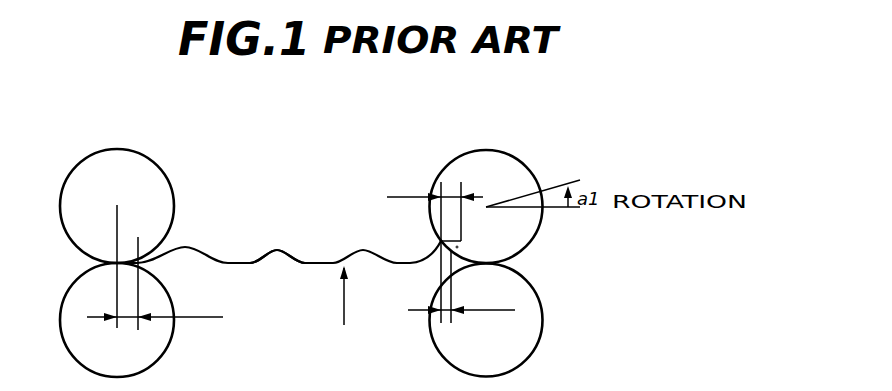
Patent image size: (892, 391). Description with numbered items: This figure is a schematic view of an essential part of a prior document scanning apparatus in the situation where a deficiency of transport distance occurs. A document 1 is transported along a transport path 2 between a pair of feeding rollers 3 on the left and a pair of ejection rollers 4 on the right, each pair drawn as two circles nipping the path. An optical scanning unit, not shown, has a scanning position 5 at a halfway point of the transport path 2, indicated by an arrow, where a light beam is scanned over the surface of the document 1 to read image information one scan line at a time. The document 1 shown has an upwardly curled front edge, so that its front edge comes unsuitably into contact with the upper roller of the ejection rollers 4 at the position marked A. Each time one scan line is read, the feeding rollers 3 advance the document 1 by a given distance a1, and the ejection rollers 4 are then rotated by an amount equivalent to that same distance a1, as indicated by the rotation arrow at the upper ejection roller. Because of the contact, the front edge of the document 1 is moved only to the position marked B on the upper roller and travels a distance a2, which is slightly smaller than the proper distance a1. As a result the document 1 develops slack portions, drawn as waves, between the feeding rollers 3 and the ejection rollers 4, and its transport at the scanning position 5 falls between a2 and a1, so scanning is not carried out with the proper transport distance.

The document 1 is at (277, 248).
The transport path 2 is at (273, 264).
The pair of feeding rollers 3 is at (80, 182).
The pair of ejection rollers 4 is at (512, 168).
The scanning position 5 is at (342, 314).
The contact position A is at (440, 245).
The moved front edge position B is at (457, 247).
The given transport distance a1 is at (285, 247).
The actual transport distance a2 is at (461, 299).